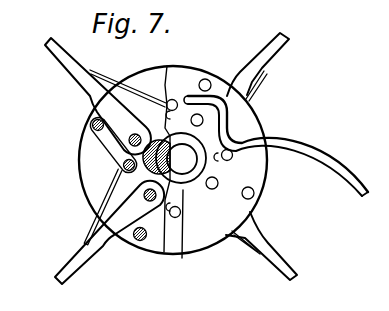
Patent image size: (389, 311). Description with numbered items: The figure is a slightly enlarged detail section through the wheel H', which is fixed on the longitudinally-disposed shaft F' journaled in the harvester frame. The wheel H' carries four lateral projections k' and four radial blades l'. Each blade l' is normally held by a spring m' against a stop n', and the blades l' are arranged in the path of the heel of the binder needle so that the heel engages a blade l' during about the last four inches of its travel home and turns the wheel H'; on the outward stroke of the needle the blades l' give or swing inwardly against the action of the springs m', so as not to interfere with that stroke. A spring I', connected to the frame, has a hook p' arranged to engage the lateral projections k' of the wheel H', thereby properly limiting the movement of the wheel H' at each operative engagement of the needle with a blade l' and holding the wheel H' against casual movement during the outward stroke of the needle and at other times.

The longitudinally-disposed shaft F' is at (173, 160).
The wheel H' is at (264, 242).
The spring I' is at (276, 146).
The hook p' is at (249, 94).
The radial blades l' is at (109, 237).
The springs m' is at (92, 180).
The stops n' is at (133, 253).
The lateral projections k' is at (174, 179).